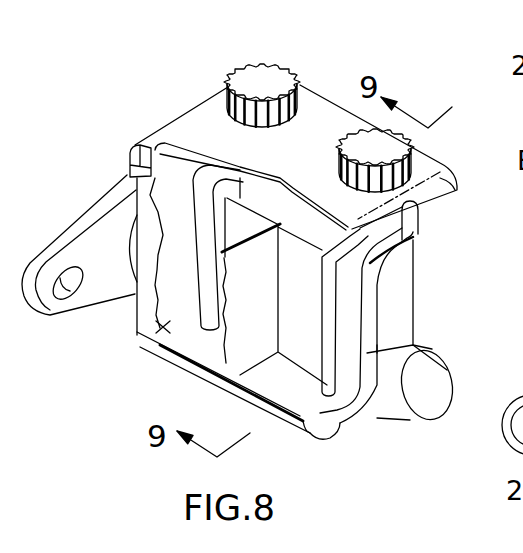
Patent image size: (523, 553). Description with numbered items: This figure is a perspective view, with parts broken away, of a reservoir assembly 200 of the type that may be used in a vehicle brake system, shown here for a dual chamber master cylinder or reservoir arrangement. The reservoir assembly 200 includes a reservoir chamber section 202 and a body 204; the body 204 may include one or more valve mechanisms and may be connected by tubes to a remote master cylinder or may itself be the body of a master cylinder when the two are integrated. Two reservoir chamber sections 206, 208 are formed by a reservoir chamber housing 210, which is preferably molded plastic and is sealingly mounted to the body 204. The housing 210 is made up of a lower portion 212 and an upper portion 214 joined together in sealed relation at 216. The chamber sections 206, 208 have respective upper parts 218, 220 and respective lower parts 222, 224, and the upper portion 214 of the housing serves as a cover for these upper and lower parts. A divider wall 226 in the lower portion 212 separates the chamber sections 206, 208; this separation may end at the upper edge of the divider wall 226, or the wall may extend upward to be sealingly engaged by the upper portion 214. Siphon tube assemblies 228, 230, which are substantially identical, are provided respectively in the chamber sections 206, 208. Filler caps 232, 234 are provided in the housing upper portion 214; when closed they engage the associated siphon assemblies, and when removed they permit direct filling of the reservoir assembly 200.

The reservoir assembly 200 is at (116, 325).
The reservoir chamber section 202 is at (430, 137).
The body 204 is at (440, 367).
The reservoir chamber section 206 is at (159, 318).
The reservoir chamber section 208 is at (337, 410).
The reservoir chamber housing 210 is at (443, 222).
The lower portion 212 is at (383, 240).
The upper portion 214 is at (466, 163).
The sealed joint 216 is at (127, 167).
The upper part 218 is at (185, 152).
The upper part 220 is at (365, 258).
The lower part 222 is at (196, 333).
The lower part 224 is at (305, 434).
The divider wall 226 is at (263, 352).
The siphon tube assembly 228 is at (200, 218).
The siphon tube assembly 230 is at (345, 342).
The filler cap 232 is at (260, 85).
The filler cap 234 is at (357, 130).